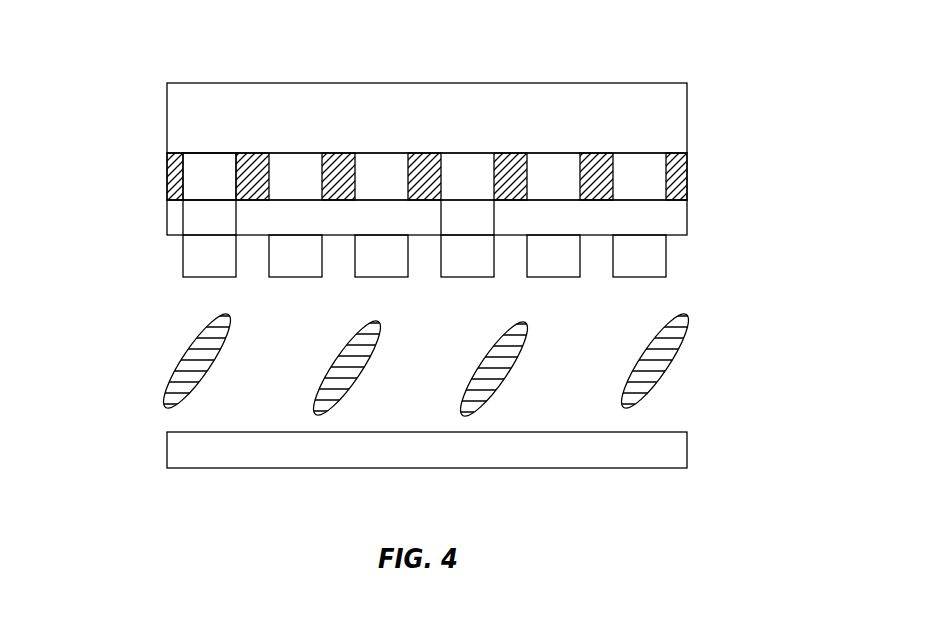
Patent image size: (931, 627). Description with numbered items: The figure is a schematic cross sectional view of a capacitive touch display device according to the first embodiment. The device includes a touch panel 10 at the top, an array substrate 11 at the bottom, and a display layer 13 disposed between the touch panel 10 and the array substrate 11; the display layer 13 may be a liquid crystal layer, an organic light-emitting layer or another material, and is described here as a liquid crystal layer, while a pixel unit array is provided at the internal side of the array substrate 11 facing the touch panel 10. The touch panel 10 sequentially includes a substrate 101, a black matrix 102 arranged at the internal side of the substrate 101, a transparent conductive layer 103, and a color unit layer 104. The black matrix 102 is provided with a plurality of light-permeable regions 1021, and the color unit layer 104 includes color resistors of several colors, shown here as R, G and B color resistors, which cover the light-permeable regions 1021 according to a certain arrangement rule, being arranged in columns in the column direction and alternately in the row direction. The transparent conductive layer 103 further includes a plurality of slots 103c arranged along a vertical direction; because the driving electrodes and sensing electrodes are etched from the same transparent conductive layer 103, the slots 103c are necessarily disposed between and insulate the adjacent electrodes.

The touch panel 10 is at (148, 95).
The substrate 101 is at (687, 117).
The black matrix 102 is at (687, 175).
The light-permeable regions 1021 is at (215, 177).
The transparent conductive layer 103 is at (687, 217).
The slots 103c is at (205, 222).
The color unit layer 104 is at (665, 277).
The display layer 13 is at (177, 373).
The array substrate 11 is at (160, 460).